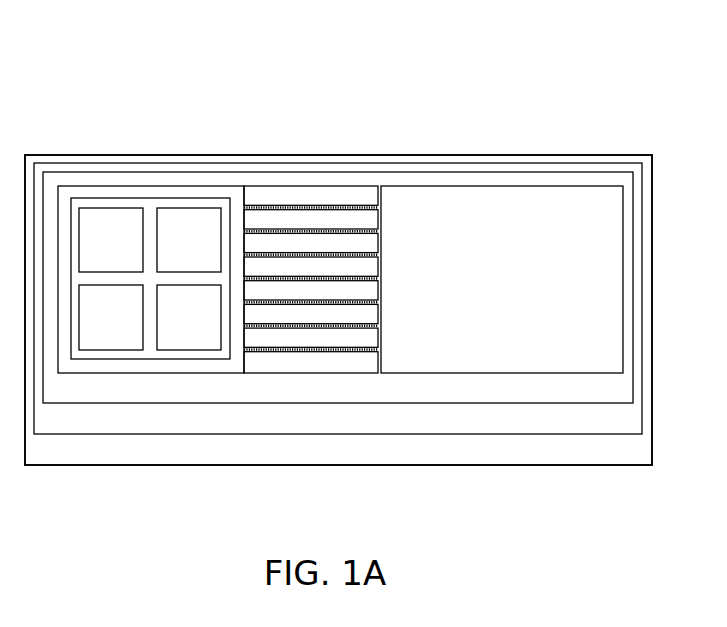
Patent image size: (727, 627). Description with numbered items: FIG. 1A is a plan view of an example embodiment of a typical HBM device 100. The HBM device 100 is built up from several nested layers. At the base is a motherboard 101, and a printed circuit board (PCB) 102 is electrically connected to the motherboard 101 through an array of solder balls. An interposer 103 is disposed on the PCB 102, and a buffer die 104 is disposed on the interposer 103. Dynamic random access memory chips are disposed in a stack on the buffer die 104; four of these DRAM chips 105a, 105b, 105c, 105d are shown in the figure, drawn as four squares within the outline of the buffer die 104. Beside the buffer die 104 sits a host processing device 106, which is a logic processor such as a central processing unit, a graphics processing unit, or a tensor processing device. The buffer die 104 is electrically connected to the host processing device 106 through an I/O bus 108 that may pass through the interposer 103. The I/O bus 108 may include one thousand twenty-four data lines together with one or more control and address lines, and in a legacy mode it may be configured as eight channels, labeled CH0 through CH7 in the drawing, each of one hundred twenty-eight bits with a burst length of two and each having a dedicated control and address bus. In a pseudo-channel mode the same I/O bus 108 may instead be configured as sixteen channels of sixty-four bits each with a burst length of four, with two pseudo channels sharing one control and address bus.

The HBM device 100 is at (118, 70).
The motherboard 101 is at (506, 453).
The printed circuit board 102 is at (540, 418).
The interposer 103 is at (577, 390).
The buffer die 104 is at (71, 190).
The DRAM chip 105a is at (108, 324).
The DRAM chip 105b is at (191, 324).
The DRAM chip 105c is at (124, 233).
The DRAM chip 105d is at (187, 233).
The host processing device 106 is at (529, 203).
The I/O bus 108 is at (310, 366).